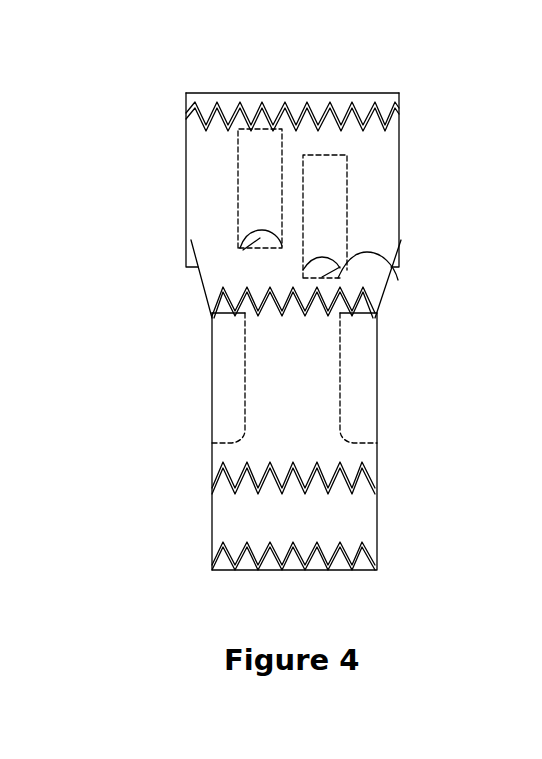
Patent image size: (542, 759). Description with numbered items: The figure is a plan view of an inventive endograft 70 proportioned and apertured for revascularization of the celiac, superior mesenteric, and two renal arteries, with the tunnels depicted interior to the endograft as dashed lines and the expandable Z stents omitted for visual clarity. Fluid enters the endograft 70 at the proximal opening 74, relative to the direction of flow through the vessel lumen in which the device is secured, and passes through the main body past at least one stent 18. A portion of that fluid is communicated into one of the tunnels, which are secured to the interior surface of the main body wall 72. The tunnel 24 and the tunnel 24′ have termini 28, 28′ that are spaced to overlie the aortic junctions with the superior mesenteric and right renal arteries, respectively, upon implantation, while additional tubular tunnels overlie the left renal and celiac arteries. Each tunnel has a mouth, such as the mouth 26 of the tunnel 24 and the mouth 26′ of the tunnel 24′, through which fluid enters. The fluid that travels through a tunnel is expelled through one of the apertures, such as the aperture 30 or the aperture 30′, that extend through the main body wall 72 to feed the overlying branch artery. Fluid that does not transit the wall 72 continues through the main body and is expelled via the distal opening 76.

The proximal opening 74 is at (290, 93).
The stent 18 is at (186, 107).
The mouth 26 is at (347, 155).
The tunnel 24 is at (322, 210).
The aperture 30 is at (378, 253).
The terminus 28 is at (320, 277).
The main body wall 72 is at (305, 527).
The mouth 26′ is at (377, 313).
The tunnel 24′ is at (357, 383).
The terminus 28′ is at (369, 436).
The aperture 30′ is at (366, 452).
The distal opening 76 is at (290, 572).
The endograft 70 is at (150, 273).